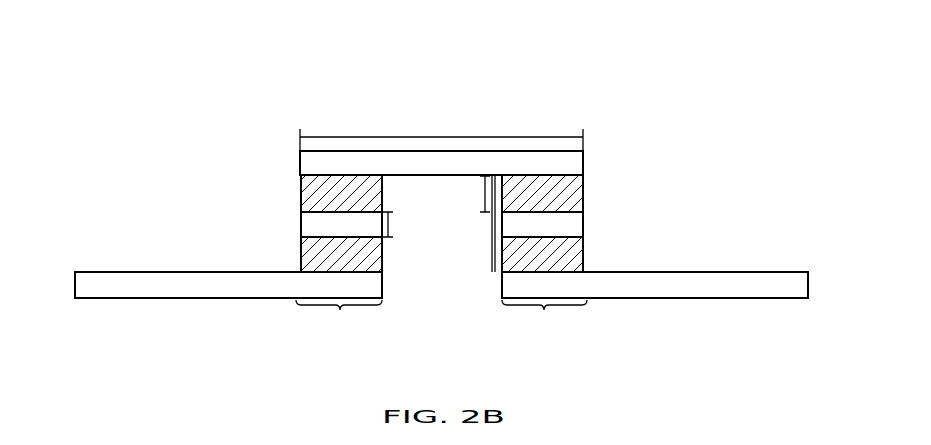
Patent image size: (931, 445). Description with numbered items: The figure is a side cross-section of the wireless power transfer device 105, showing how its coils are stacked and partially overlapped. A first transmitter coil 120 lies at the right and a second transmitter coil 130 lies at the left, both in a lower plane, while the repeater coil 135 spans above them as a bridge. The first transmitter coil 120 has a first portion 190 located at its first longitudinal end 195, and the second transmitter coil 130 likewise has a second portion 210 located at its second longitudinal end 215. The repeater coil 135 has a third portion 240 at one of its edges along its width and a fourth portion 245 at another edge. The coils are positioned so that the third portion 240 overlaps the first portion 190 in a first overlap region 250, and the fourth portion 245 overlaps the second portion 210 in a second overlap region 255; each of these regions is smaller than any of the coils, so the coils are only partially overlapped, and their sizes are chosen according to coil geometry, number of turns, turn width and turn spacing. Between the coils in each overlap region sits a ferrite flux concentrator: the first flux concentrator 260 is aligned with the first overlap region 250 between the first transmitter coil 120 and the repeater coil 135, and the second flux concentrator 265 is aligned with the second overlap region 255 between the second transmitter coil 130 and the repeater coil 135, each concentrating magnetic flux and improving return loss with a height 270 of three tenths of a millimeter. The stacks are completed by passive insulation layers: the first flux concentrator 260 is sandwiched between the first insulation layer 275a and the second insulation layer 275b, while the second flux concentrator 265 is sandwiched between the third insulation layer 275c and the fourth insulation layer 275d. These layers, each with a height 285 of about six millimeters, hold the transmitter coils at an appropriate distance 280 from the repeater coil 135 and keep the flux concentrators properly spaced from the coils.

The wireless power transfer device 105 is at (633, 67).
The first transmitter coil 120 is at (653, 290).
The second transmitter coil 130 is at (228, 290).
The repeater coil 135 is at (439, 131).
The first portion 190 is at (508, 287).
The first longitudinal end 195 is at (503, 307).
The second portion 210 is at (370, 284).
The second longitudinal end 215 is at (385, 302).
The third portion 240 is at (537, 173).
The fourth portion 245 is at (306, 165).
The first overlap region 250 is at (544, 315).
The second overlap region 255 is at (340, 316).
The first flux concentrator 260 is at (583, 222).
The second flux concentrator 265 is at (306, 225).
The height 270 is at (393, 223).
The first insulation layer 275a is at (583, 190).
The second insulation layer 275b is at (583, 252).
The third insulation layer 275c is at (306, 195).
The fourth insulation layer 275d is at (306, 255).
The distance 280 is at (491, 257).
The height 285 is at (480, 198).